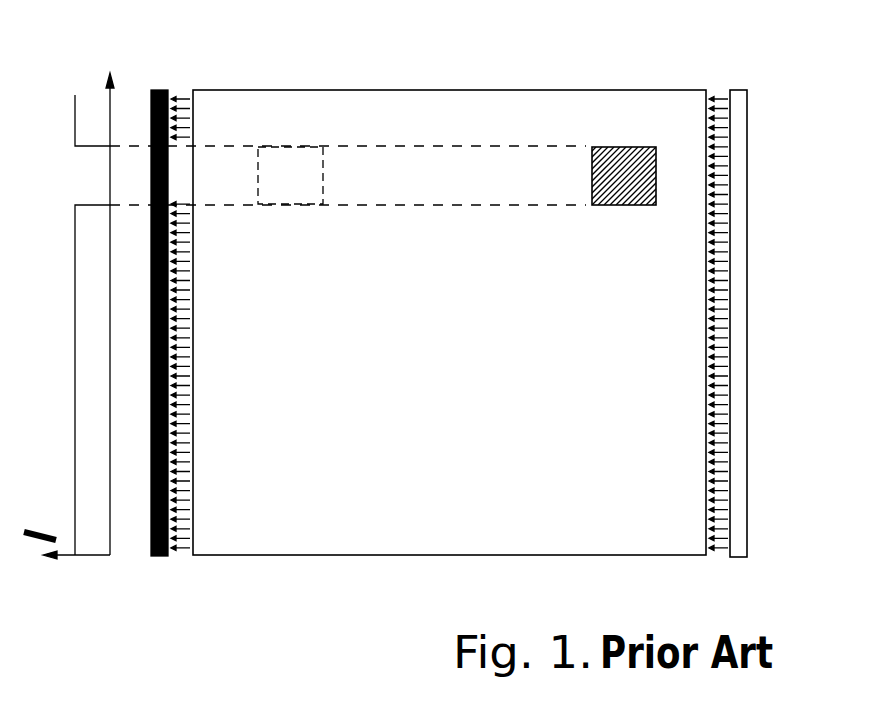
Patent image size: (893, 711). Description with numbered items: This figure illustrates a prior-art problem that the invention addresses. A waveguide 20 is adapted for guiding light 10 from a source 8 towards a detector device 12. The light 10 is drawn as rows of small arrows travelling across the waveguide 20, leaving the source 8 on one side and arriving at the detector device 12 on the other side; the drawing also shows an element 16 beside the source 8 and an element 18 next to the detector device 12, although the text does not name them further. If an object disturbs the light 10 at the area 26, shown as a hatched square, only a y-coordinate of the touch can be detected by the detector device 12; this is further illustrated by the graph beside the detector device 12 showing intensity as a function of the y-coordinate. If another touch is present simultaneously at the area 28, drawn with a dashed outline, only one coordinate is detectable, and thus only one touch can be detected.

The source 8 is at (737, 225).
The light 10 is at (181, 97).
The detector device 12 is at (152, 552).
The right side electrode gap 16 is at (698, 310).
The left electrode bar 18 is at (200, 292).
The waveguide 20 is at (432, 522).
The area 26 is at (634, 162).
The area 28 is at (292, 186).